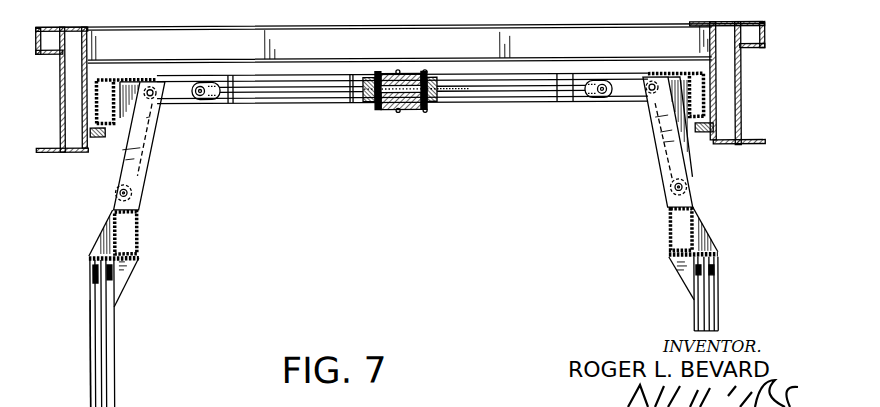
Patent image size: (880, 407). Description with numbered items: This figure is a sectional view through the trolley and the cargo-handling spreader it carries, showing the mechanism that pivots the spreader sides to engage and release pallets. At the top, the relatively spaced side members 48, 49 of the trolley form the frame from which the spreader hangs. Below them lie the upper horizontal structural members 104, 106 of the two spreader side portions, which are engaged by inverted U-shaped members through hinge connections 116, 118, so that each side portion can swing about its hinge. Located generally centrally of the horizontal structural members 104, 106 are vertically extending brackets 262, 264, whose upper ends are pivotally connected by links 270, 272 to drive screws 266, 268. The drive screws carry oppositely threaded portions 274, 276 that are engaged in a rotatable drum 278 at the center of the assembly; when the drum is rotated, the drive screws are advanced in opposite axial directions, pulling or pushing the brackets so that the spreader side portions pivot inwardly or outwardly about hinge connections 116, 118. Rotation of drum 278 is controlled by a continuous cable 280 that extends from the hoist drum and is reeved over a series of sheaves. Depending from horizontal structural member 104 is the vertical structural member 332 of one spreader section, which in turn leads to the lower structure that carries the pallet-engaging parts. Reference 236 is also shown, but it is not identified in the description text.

The side member 48 is at (97, 99).
The side member 49 is at (705, 95).
The upper horizontal structural member 104 is at (138, 232).
The upper horizontal structural member 106 is at (668, 233).
The hinge connection 116 is at (102, 200).
The hinge connection 118 is at (697, 192).
The leg post 236 is at (102, 376).
The vertical bracket 262 is at (660, 153).
The vertical bracket 264 is at (150, 158).
The drive screw 266 is at (520, 95).
The drive screw 268 is at (310, 94).
The link 270 is at (622, 88).
The link 272 is at (183, 92).
The threaded portion 274 is at (438, 83).
The threaded portion 276 is at (364, 81).
The rotatable drum 278 is at (417, 112).
The continuous cable 280 is at (390, 112).
The vertical structural member 332 is at (91, 338).